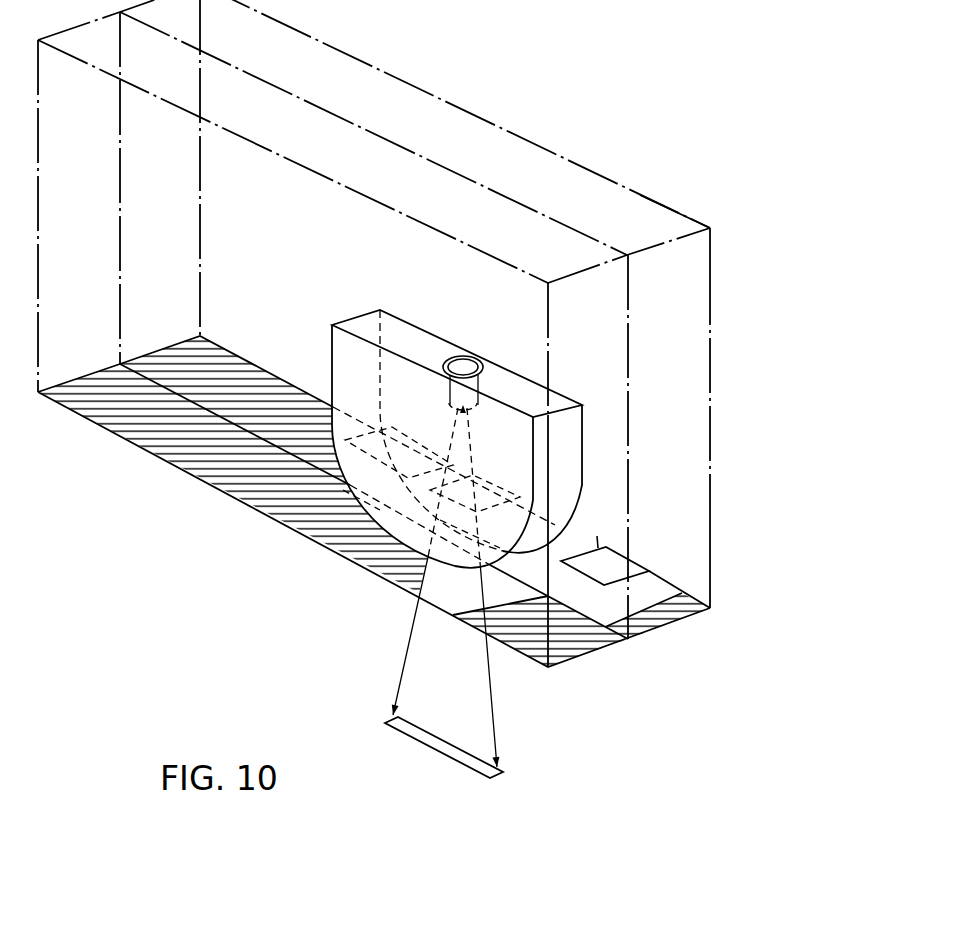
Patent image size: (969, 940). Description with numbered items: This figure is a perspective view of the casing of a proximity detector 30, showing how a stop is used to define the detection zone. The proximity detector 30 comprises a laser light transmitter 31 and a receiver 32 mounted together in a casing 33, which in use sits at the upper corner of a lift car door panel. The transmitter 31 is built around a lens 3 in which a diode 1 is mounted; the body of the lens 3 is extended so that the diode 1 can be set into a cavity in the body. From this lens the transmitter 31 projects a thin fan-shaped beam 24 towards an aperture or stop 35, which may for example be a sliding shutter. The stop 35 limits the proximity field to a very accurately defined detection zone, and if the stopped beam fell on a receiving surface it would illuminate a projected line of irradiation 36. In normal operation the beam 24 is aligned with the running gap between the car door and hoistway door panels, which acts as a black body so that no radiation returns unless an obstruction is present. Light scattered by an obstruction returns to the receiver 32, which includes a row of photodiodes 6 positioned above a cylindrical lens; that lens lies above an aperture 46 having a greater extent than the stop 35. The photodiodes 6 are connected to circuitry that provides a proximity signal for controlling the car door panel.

The proximity detector 30 is at (630, 182).
The casing 33 is at (711, 307).
The lens 3 is at (362, 320).
The laser light transmitter 31 is at (452, 357).
The diode 1 is at (472, 362).
The fan-shaped beam 24 is at (457, 428).
The photodiodes 6 is at (598, 548).
The receiver 32 is at (653, 548).
The aperture 46 is at (655, 593).
The stop 35 is at (430, 578).
The projected line of irradiation 36 is at (442, 747).